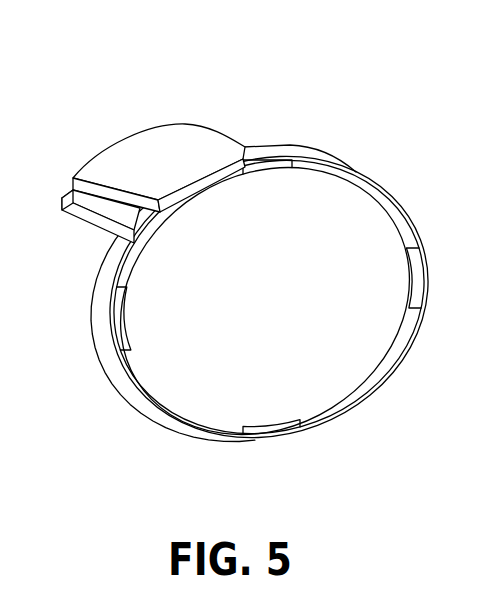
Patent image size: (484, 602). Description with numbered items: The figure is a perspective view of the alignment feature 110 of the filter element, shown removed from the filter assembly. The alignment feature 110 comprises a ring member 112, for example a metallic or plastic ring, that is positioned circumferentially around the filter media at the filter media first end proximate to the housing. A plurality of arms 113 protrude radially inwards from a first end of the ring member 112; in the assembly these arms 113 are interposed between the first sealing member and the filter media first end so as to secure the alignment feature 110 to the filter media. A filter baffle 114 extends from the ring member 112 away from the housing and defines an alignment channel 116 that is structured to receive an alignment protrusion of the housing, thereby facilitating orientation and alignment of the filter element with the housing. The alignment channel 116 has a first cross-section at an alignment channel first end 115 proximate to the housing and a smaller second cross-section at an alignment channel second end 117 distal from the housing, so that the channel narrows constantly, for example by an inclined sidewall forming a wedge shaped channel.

The alignment feature 110 is at (281, 128).
The ring member 112 is at (122, 382).
The arms 113 is at (267, 444).
The filter baffle 114 is at (162, 144).
The alignment channel first end 115 is at (140, 236).
The alignment channel 116 is at (112, 208).
The alignment channel second end 117 is at (68, 214).